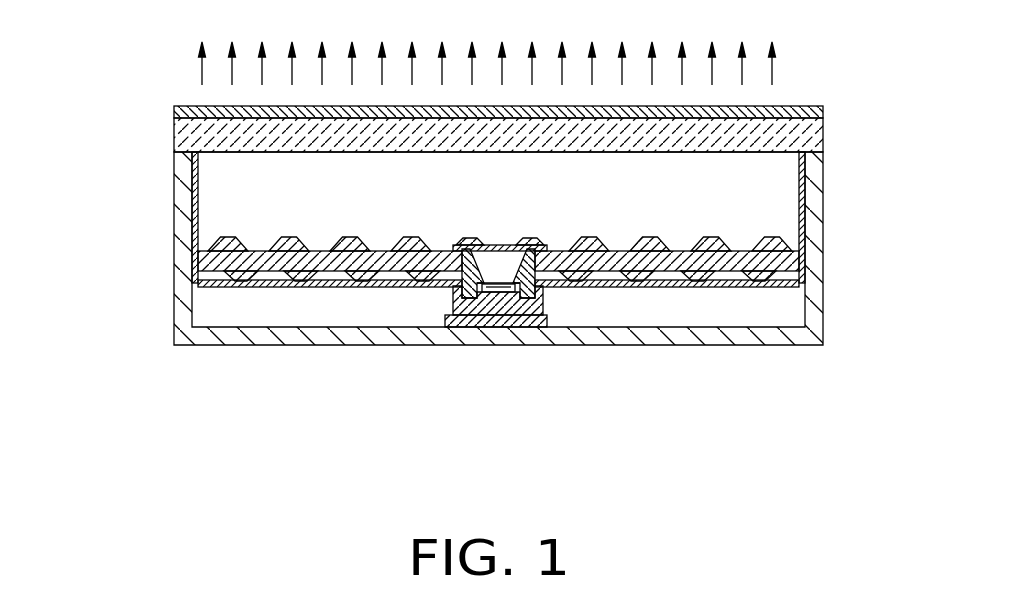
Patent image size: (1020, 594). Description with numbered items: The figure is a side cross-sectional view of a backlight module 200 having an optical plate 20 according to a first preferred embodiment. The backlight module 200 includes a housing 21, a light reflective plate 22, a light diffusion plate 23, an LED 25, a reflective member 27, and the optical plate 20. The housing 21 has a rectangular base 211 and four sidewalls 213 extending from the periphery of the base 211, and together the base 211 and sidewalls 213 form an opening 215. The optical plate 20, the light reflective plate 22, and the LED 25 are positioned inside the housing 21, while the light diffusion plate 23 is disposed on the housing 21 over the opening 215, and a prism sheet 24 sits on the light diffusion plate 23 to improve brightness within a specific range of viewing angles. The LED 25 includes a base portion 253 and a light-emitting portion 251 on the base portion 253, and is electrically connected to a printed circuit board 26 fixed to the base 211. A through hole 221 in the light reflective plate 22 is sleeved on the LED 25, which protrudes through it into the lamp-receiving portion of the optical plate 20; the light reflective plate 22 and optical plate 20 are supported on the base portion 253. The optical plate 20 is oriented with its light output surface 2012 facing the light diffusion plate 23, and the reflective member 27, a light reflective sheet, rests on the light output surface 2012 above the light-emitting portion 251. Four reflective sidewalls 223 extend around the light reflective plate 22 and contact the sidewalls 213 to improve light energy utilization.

The backlight module 200 is at (467, 255).
The light output surface 2012 is at (259, 248).
The optical plate 20 is at (498, 209).
The housing 21 is at (415, 268).
The base 211 is at (449, 356).
The sidewalls 213 is at (183, 218).
The opening 215 is at (790, 178).
The light reflective plate 22 is at (559, 269).
The through hole 221 is at (553, 285).
The reflective sidewalls 223 is at (800, 227).
The light diffusion plate 23 is at (817, 132).
The prism sheet 24 is at (787, 110).
The LED 25 is at (452, 333).
The light-emitting portion 251 is at (462, 276).
The base portion 253 is at (487, 293).
The printed circuit board 26 is at (500, 327).
The reflective member 27 is at (502, 245).